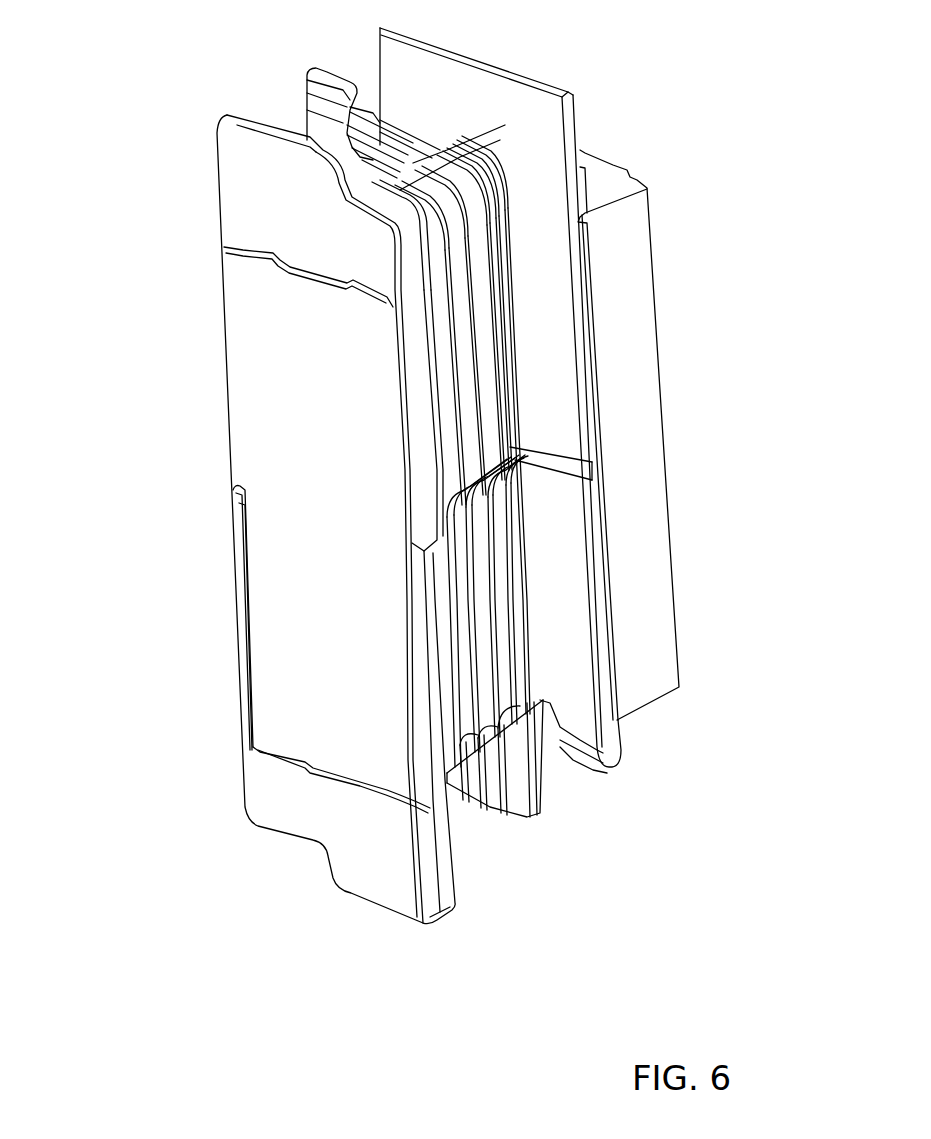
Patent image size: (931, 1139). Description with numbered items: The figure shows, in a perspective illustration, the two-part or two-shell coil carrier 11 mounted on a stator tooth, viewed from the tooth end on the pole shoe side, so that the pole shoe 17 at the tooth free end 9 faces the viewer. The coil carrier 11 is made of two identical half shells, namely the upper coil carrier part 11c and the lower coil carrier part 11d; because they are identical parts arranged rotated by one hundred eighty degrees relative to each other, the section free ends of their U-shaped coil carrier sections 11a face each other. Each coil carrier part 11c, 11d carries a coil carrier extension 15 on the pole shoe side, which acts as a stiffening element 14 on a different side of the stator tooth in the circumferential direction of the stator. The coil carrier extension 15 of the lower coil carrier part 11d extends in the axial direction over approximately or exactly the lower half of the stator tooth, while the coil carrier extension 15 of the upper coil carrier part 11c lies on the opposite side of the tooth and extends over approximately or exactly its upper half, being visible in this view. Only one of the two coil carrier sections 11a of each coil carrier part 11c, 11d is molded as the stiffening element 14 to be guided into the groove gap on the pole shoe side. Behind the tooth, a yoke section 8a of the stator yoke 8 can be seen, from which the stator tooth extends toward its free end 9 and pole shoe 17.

The stator yoke 8 is at (615, 160).
The yoke section 8a is at (627, 228).
The tooth free end 9 is at (232, 246).
The coil carrier 11 is at (542, 458).
The coil carrier sections 11a is at (460, 307).
The upper coil carrier part 11c is at (415, 183).
The lower coil carrier part 11d is at (490, 730).
The stiffening element 14 is at (234, 527).
The coil carrier extension 15 is at (417, 390).
The pole shoe 17 is at (293, 405).